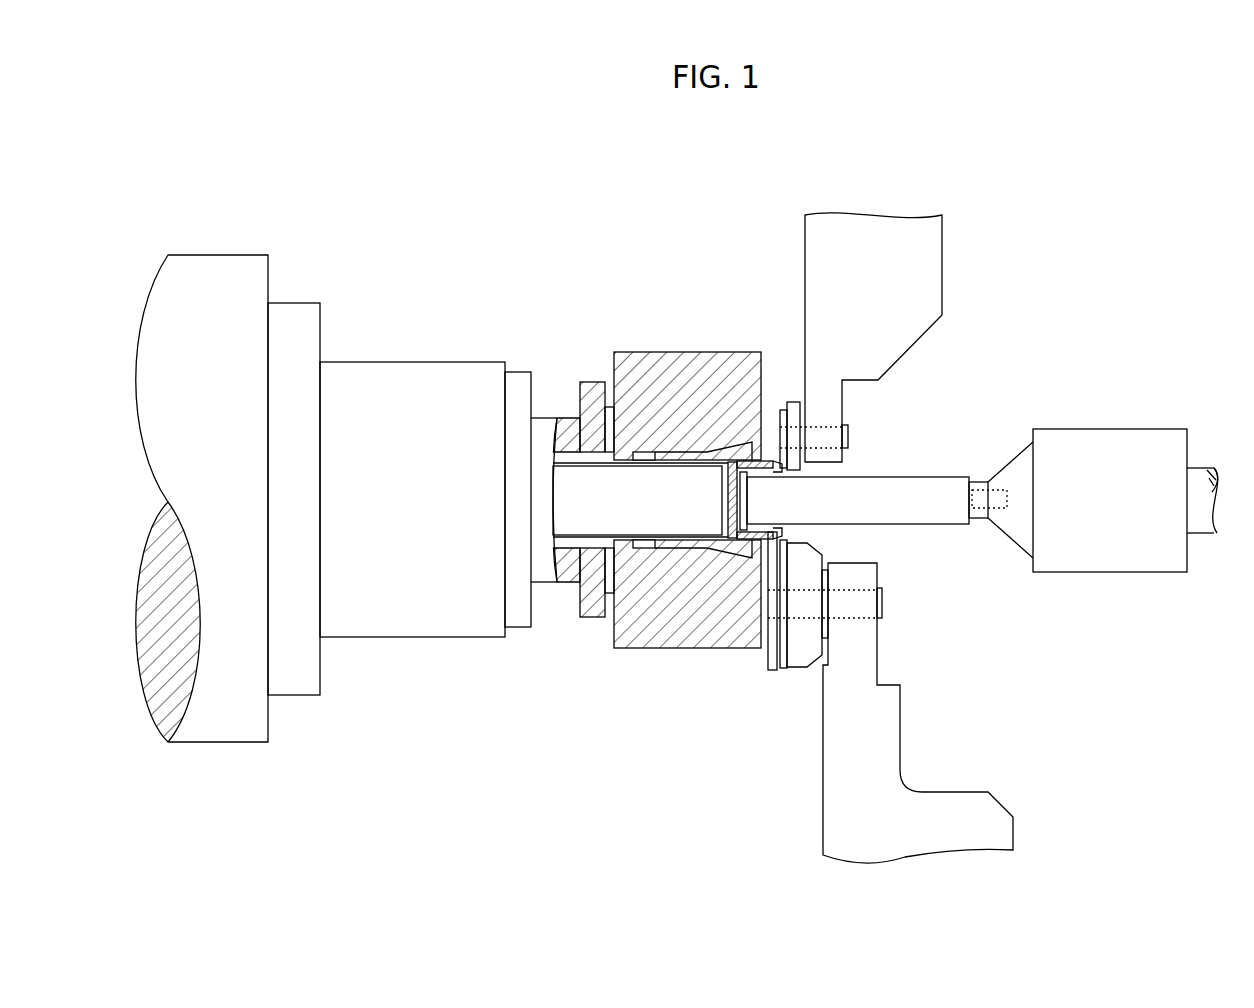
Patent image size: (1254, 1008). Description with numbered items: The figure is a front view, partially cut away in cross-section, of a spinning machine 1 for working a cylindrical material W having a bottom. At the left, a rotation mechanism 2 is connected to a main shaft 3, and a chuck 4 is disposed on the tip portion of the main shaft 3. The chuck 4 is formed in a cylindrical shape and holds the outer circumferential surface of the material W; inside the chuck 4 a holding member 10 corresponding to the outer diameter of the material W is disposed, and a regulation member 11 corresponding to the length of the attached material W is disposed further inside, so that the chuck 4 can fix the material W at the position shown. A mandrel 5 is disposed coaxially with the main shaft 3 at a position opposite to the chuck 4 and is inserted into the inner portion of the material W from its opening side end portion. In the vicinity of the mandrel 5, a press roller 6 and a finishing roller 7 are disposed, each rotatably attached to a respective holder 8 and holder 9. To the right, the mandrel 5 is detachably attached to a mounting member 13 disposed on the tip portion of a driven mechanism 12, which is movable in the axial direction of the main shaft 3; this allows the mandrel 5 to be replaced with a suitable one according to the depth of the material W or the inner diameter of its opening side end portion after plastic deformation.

The spinning machine 1 is at (1033, 285).
The rotation mechanism 2 is at (296, 302).
The main shaft 3 is at (411, 357).
The chuck 4 is at (691, 347).
The mandrel 5 is at (908, 477).
The press roller 6 is at (793, 670).
The finishing roller 7 is at (790, 402).
The holder 8 is at (900, 713).
The holder 9 is at (942, 270).
The holding member 10 is at (724, 455).
The regulation member 11 is at (673, 472).
The driven mechanism 12 is at (1103, 429).
The mounting member 13 is at (1014, 459).
The material W is at (728, 500).